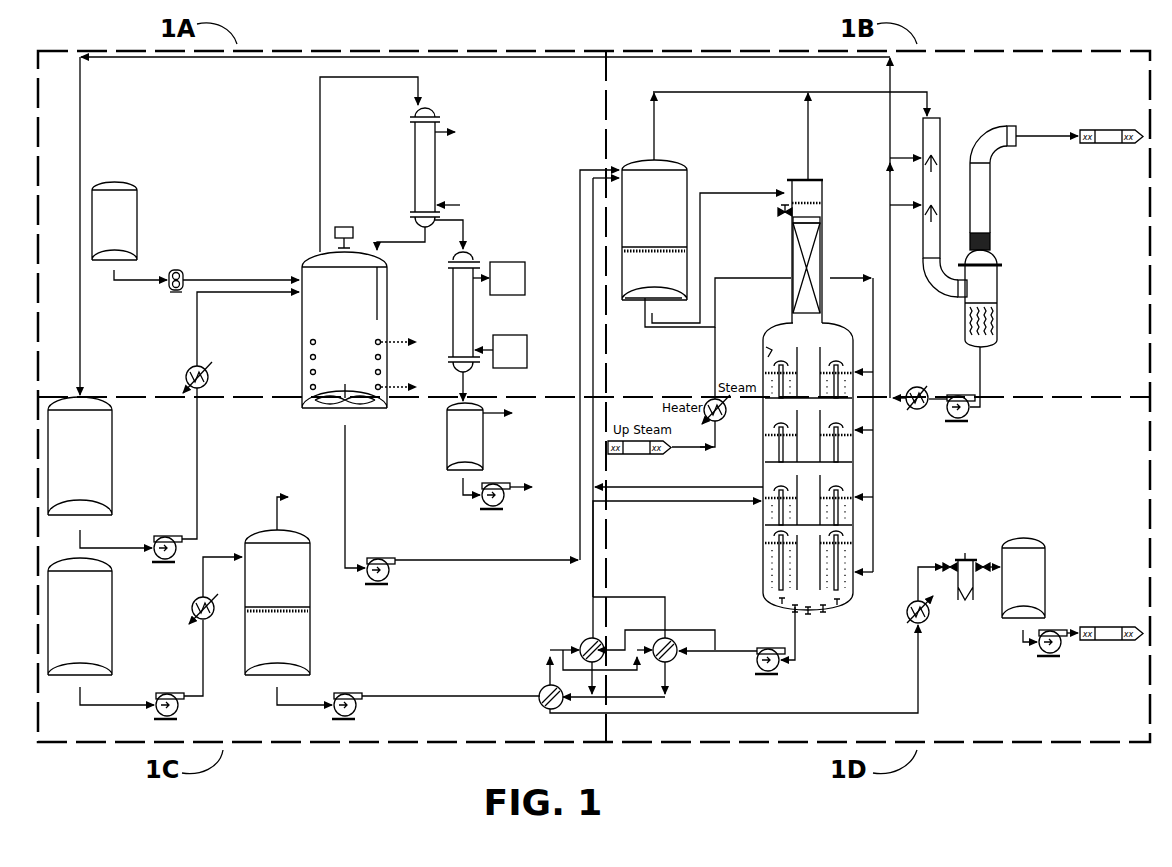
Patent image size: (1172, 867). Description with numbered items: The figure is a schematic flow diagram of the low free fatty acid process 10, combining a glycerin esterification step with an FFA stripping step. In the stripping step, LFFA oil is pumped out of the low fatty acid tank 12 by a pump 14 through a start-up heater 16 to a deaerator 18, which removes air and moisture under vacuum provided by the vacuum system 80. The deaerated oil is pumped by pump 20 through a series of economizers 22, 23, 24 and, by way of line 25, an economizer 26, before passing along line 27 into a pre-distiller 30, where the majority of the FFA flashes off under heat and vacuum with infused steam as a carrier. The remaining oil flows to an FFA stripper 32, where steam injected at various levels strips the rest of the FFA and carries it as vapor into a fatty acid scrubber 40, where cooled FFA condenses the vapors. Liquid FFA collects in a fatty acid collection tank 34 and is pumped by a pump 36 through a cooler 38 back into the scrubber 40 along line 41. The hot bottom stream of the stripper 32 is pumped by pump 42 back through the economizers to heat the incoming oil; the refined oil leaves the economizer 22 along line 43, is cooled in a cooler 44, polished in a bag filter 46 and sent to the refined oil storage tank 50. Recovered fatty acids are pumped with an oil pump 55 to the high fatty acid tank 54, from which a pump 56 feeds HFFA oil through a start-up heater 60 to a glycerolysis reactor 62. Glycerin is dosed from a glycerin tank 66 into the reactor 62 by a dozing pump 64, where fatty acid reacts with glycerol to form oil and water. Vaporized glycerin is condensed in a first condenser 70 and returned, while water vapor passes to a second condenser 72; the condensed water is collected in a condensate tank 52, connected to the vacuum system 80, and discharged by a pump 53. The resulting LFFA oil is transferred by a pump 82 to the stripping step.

The low free fatty acid process 10 is at (1004, 44).
The low fatty acid tank 12 is at (113, 667).
The pump 14 is at (184, 693).
The start-up heater 16 is at (218, 605).
The deaerator 18 is at (311, 660).
The pump 20 is at (355, 693).
The economizer 22 is at (544, 706).
The economizer 23 is at (589, 636).
The economizer 24 is at (672, 660).
The line 25 is at (636, 502).
The economizer 26 is at (763, 537).
The line 27 is at (668, 487).
The pre-distiller 30 is at (687, 180).
The FFA stripper 32 is at (823, 212).
The fatty acid collection tank 34 is at (995, 256).
The pump 36 is at (970, 412).
The cooler 38 is at (916, 410).
The fatty acid scrubber 40 is at (940, 135).
The line 41 is at (890, 232).
The pump 42 is at (780, 640).
The line 43 is at (745, 713).
The cooler 44 is at (928, 613).
The bag filter 46 is at (966, 557).
The refined oil storage tank 50 is at (1047, 585).
The condensate tank 52 is at (447, 452).
The pump 53 is at (507, 498).
The high fatty acid tank 54 is at (113, 450).
The oil pump 55 is at (1067, 645).
The pump 56 is at (168, 537).
The start-up heater 60 is at (209, 381).
The glycerolysis reactor 62 is at (300, 350).
The dozing pump 64 is at (184, 271).
The glycerin tank 66 is at (139, 226).
The first condenser 70 is at (415, 148).
The condenser 72 is at (477, 330).
The vacuum system 80 is at (310, 479).
The pump 82 is at (385, 555).